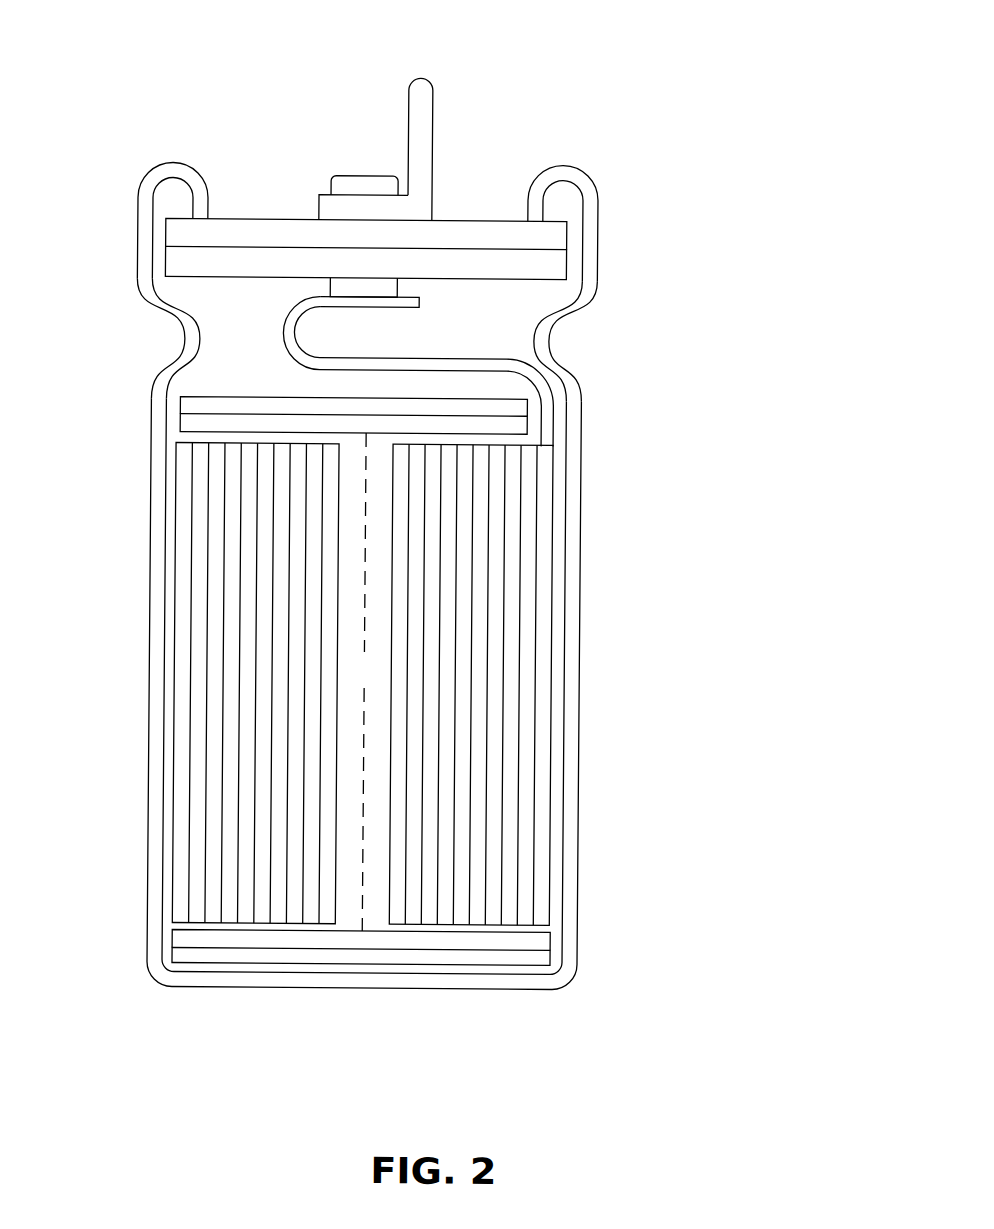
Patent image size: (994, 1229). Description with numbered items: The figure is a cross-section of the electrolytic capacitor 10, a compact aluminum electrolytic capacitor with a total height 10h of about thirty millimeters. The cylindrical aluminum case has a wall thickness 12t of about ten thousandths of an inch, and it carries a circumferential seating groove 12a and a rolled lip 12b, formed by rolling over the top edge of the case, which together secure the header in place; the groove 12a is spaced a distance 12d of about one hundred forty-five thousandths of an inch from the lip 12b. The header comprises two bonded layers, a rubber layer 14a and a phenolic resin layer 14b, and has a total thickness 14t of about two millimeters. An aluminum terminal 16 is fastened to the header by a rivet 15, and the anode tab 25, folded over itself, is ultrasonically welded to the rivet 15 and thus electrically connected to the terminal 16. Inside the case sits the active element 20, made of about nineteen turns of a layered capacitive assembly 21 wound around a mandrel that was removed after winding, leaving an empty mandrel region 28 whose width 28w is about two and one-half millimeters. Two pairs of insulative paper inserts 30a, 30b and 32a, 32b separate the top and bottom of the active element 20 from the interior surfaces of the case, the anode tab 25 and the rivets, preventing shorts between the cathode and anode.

The electrolytic capacitor 10 is at (636, 75).
The total height 10h is at (590, 988).
The circumferential seating groove 12a is at (182, 340).
The rolled lip 12b is at (155, 168).
The distance 12d is at (555, 338).
The thickness 12t is at (248, 785).
The layer 14a is at (172, 234).
The layer 14b is at (172, 260).
The total thickness 14t is at (868, 164).
The rivet 15 is at (357, 178).
The aluminum terminal 16 is at (424, 79).
The active element 20 is at (250, 621).
The layered capacitive assembly 21 is at (187, 499).
The anode tab 25 is at (405, 357).
The mandrel region 28 is at (377, 684).
The central slot width 28w is at (432, 1050).
The insulative insert 30a is at (524, 406).
The insulative insert 30b is at (524, 423).
The insulative insert 32a is at (182, 940).
The insulative insert 32b is at (183, 958).